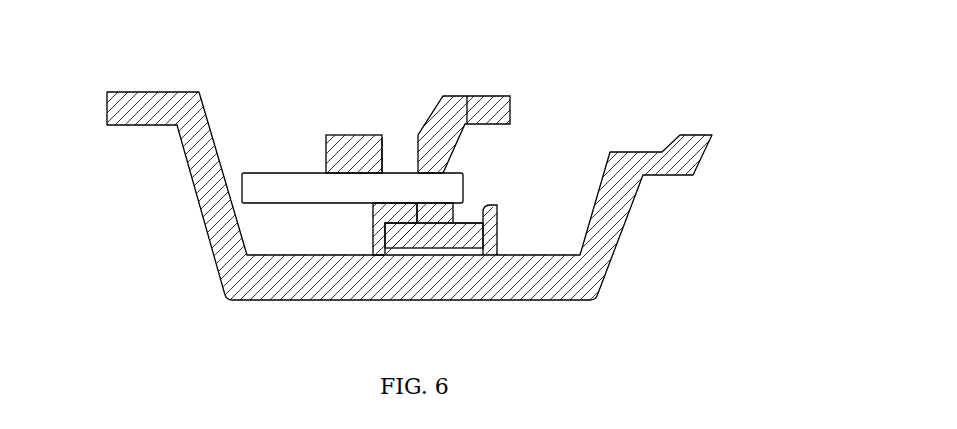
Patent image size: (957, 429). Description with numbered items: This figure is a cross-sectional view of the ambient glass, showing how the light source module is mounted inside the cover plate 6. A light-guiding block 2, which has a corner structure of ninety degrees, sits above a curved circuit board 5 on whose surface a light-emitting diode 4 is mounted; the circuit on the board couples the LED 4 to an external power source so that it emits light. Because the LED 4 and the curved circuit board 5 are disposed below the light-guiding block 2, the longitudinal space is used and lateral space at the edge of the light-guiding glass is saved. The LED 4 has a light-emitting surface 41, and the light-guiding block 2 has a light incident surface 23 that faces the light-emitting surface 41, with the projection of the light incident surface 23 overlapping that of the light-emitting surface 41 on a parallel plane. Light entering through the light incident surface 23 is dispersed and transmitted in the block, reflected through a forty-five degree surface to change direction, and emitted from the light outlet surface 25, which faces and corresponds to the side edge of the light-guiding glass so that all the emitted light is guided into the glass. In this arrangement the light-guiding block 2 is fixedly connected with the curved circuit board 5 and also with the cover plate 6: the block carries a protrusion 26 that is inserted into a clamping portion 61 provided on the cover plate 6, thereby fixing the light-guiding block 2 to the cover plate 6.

The light-guiding block 2 is at (415, 155).
The light-emitting diode 4 is at (341, 137).
The curved circuit board 5 is at (262, 188).
The cover plate 6 is at (594, 285).
The light incident surface 23 is at (478, 95).
The light outlet surface 25 is at (513, 110).
The protrusion 26 is at (520, 100).
The light-emitting surface 41 is at (384, 141).
The clamping portion 61 is at (400, 257).